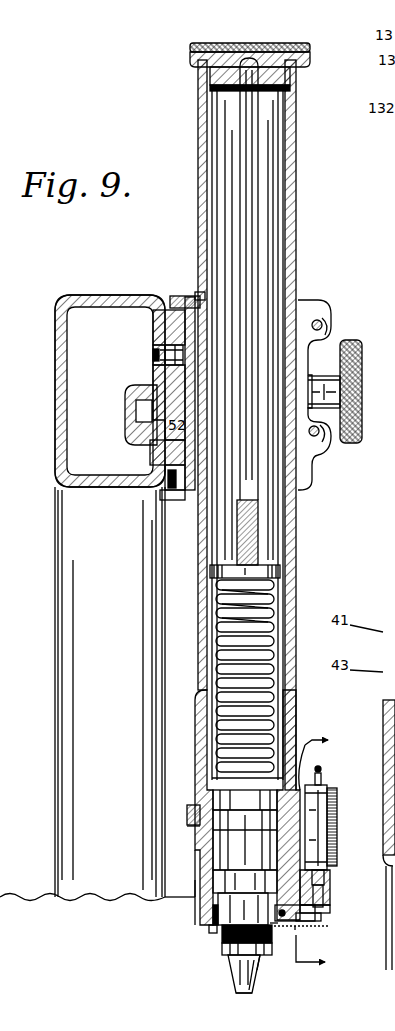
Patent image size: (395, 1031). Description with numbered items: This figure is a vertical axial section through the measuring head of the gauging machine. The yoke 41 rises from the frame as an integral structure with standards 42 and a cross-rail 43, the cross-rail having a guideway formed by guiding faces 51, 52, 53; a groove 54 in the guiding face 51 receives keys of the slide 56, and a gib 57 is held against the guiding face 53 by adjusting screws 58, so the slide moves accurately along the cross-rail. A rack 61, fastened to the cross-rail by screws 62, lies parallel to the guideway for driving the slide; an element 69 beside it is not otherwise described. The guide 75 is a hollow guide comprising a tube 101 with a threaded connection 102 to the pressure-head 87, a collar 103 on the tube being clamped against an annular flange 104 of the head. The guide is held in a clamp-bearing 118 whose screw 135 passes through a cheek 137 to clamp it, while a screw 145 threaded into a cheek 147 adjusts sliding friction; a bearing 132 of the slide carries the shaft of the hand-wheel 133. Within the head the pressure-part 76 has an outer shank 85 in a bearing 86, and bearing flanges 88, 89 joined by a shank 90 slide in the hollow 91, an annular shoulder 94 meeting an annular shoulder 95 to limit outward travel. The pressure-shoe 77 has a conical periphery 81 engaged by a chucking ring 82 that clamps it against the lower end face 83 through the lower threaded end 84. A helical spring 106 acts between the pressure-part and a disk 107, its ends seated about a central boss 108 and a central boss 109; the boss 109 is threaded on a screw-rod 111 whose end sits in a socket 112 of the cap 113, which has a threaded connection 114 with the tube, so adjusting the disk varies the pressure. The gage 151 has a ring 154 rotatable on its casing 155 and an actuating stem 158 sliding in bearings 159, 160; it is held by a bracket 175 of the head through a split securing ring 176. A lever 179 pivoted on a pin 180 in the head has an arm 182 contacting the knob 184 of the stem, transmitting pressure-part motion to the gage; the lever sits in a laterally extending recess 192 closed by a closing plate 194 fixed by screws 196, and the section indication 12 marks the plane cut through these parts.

The section line 12- 12 is at (325, 851).
The yoke 41 is at (88, 293).
The standards 42 is at (95, 690).
The cross-rail 43 is at (60, 306).
The guiding face 51 is at (168, 310).
The guiding face 52 is at (185, 328).
The guiding face 53 is at (175, 462).
The groove 54 is at (180, 296).
The slide 56 is at (197, 292).
The gib 57 is at (165, 470).
The adjusting screws 58 is at (173, 500).
The rack 61 is at (160, 380).
The screws 62 is at (153, 355).
The locating lug 69 is at (143, 418).
The guide 75 is at (298, 137).
The pressure-part 76 is at (235, 938).
The pressure-shoe 77 is at (258, 985).
The conical periphery 81 is at (236, 984).
The chucking ring 82 is at (225, 950).
The lower end face 83 is at (262, 962).
The lower threaded end 84 is at (235, 965).
The outer shank 85 is at (222, 920).
The bearing 86 is at (230, 913).
The pressure-head 87 is at (198, 867).
The bearing flange 88 is at (222, 802).
The bearing flange 89 is at (228, 882).
The shank 90 is at (240, 856).
The hollow 91 is at (220, 840).
The annular shoulder 94 is at (195, 888).
The annular shoulder 95 is at (195, 898).
The tube 101 is at (299, 165).
The threaded connection 102 is at (200, 792).
The collar 103 is at (186, 815).
The annular flange 104 is at (196, 830).
The helical spring 106 is at (235, 635).
The disk 107 is at (270, 570).
The central boss 108 is at (228, 768).
The central boss 109 is at (265, 585).
The screw-rod 111 is at (250, 150).
The socket 112 is at (258, 46).
The cap 113 is at (215, 45).
The threaded connection 114 is at (210, 70).
The clamp-bearing 118 is at (302, 300).
The bearing 132 is at (318, 376).
The hand-wheel 133 is at (350, 340).
The screw 135 is at (318, 320).
The cheek 137 is at (330, 322).
The screw 145 is at (313, 446).
The cheek 147 is at (320, 437).
The gage 151 is at (330, 797).
The ring 154 is at (337, 826).
The casing 155 is at (315, 810).
The actuating stem 158 is at (330, 898).
The bearing 159 is at (322, 782).
The bearing 160 is at (325, 872).
The bracket 175 is at (324, 886).
The split securing ring 176 is at (316, 753).
The lever 179 is at (298, 931).
The pin 180 is at (278, 928).
The arm 182 is at (330, 928).
The knob 184 is at (330, 910).
The laterally extending recess 192 is at (315, 920).
The closing plate 194 is at (320, 925).
The screws 196 is at (209, 930).